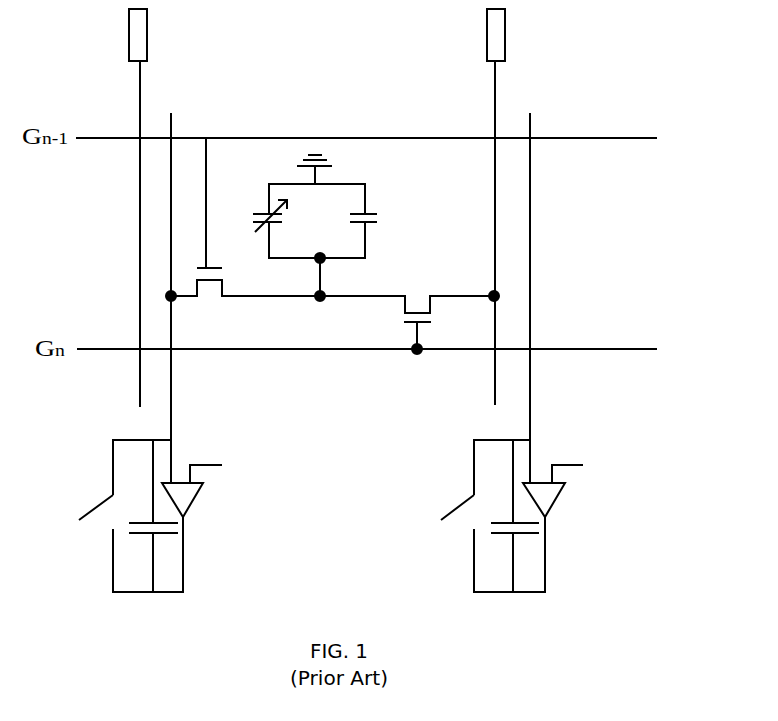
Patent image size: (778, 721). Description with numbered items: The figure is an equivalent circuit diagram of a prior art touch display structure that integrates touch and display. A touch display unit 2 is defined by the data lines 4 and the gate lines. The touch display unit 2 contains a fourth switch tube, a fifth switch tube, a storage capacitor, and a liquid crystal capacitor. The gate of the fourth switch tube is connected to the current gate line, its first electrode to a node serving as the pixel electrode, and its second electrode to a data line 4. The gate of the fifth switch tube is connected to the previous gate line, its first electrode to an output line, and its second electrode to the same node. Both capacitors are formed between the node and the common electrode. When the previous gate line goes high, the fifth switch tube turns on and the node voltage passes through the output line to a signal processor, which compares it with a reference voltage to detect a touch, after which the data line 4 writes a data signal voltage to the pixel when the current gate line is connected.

The touch display unit 2 is at (453, 185).
The data line 4 is at (140, 81).